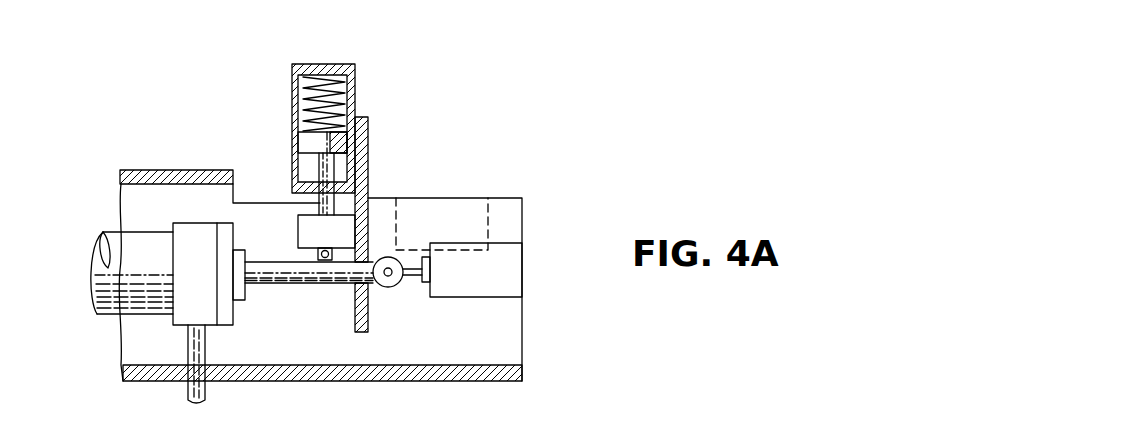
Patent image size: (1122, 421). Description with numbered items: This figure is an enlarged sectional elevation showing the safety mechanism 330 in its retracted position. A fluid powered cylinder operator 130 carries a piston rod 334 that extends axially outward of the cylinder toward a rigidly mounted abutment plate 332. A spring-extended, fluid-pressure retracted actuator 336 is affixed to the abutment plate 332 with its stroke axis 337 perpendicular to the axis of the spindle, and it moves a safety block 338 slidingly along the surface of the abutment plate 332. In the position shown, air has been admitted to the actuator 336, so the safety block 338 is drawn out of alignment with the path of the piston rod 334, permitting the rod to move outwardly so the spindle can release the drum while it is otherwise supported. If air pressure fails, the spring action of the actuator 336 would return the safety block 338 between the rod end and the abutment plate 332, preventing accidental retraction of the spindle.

The fluid powered cylinder operator 130 is at (95, 308).
The safety mechanism 330 is at (345, 189).
The abutment plate 332 is at (368, 193).
The piston rod 334 is at (312, 284).
The actuator 336 is at (352, 75).
The stroke axis 337 is at (293, 197).
The safety block 338 is at (342, 230).